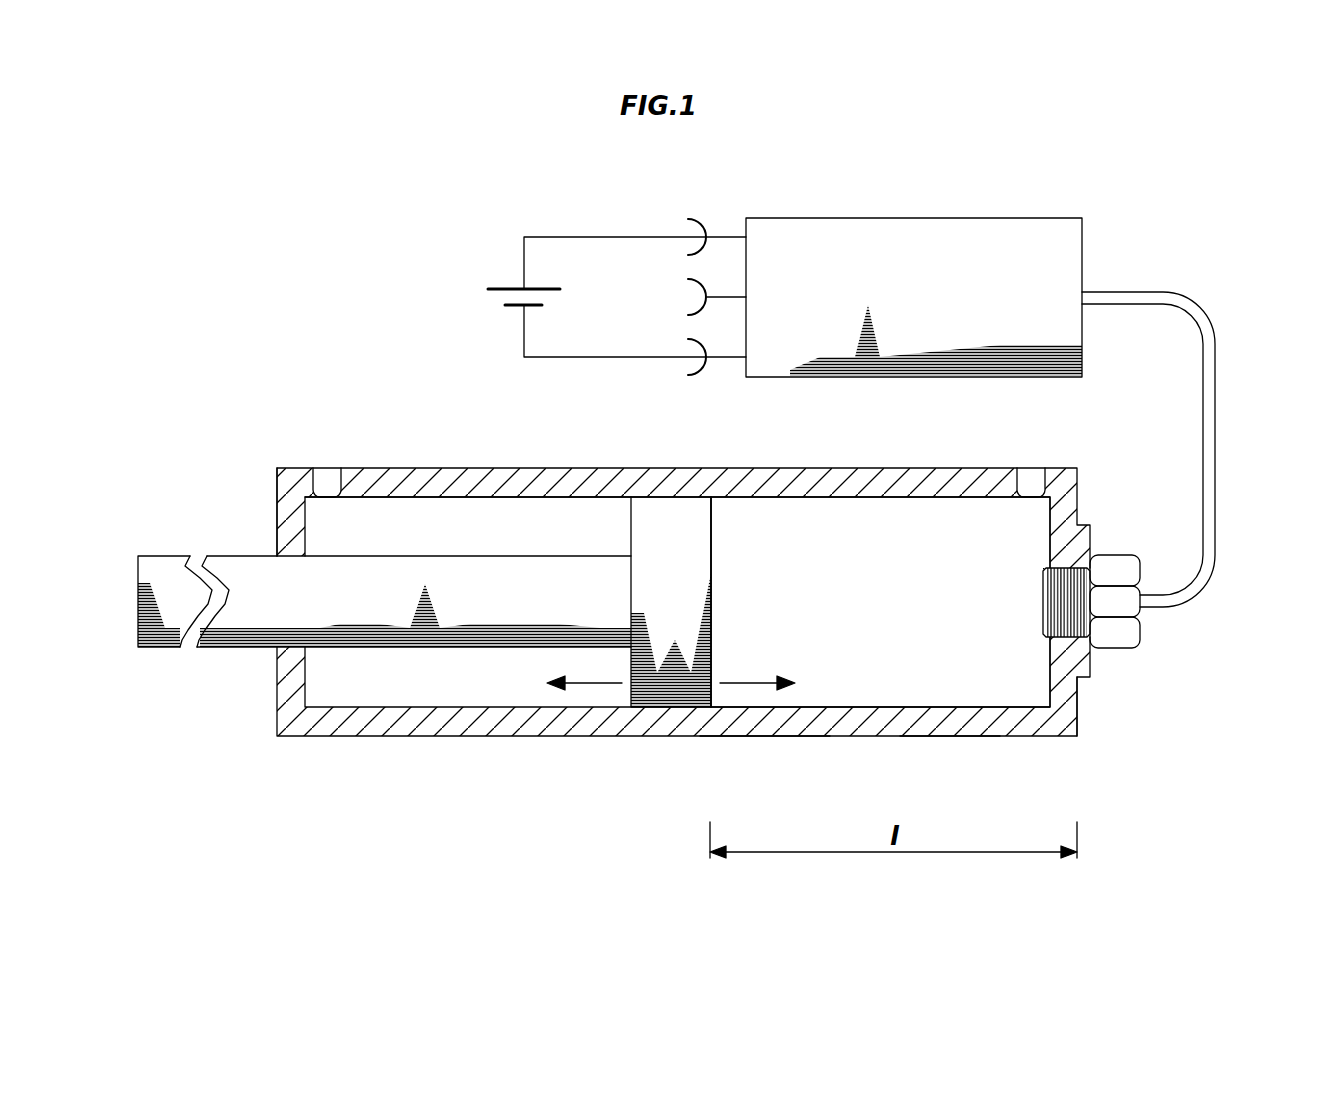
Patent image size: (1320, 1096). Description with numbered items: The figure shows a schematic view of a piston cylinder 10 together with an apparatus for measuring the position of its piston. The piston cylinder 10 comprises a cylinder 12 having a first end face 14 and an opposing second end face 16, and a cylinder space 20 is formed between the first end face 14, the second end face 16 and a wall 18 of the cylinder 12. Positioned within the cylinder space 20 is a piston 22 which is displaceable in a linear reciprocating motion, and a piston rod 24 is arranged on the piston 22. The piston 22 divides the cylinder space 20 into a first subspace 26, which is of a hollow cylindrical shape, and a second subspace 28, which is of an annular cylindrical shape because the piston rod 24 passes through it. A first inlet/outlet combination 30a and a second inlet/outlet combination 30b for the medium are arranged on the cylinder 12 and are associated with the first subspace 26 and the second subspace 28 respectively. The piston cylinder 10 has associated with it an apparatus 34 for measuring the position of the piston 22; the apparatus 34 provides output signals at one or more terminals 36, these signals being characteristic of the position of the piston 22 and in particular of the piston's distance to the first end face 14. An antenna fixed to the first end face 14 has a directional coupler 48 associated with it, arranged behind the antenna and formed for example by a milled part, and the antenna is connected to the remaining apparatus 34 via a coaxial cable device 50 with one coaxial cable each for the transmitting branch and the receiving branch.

The piston cylinder 10 is at (423, 744).
The cylinder 12 is at (827, 737).
The first end face 14 is at (1077, 710).
The second end face 16 is at (277, 492).
The wall 18 is at (950, 737).
The cylinder space 20 is at (773, 533).
The piston 22 is at (665, 690).
The piston rod 24 is at (262, 632).
The first subspace 26 is at (848, 613).
The second subspace 28 is at (480, 537).
The first inlet/outlet combination 30a is at (1028, 487).
The second inlet/outlet combination 30b is at (328, 490).
The apparatus for measuring the position of the piston 34 is at (937, 205).
The terminals 36 is at (700, 297).
The directional coupler 48 is at (1073, 600).
The coaxial cable device 50 is at (1213, 505).